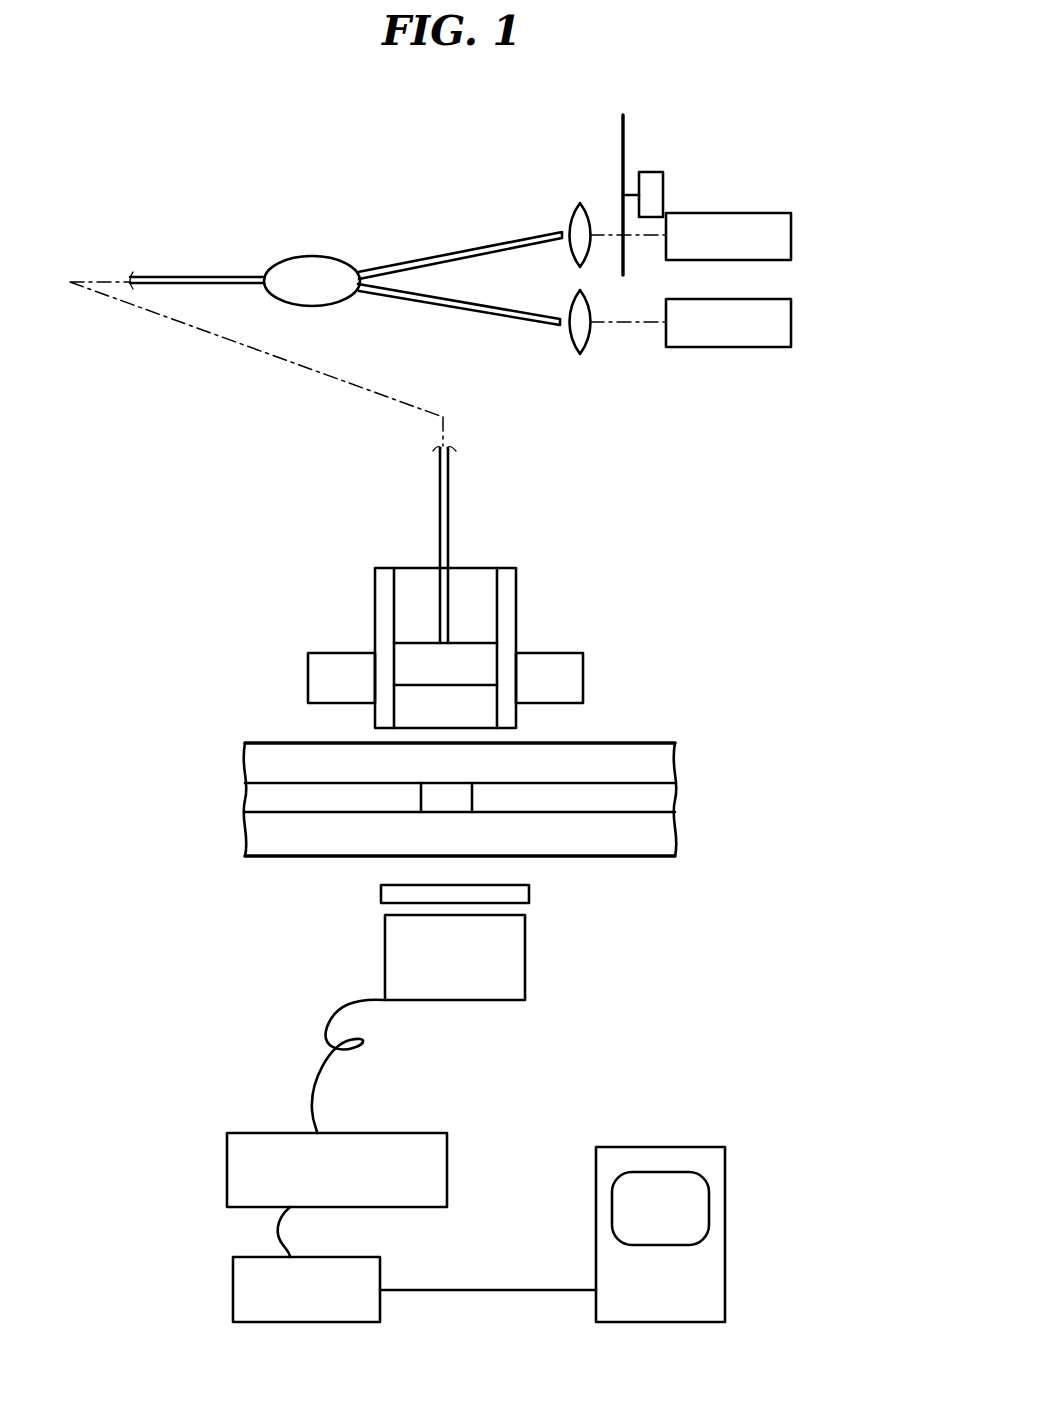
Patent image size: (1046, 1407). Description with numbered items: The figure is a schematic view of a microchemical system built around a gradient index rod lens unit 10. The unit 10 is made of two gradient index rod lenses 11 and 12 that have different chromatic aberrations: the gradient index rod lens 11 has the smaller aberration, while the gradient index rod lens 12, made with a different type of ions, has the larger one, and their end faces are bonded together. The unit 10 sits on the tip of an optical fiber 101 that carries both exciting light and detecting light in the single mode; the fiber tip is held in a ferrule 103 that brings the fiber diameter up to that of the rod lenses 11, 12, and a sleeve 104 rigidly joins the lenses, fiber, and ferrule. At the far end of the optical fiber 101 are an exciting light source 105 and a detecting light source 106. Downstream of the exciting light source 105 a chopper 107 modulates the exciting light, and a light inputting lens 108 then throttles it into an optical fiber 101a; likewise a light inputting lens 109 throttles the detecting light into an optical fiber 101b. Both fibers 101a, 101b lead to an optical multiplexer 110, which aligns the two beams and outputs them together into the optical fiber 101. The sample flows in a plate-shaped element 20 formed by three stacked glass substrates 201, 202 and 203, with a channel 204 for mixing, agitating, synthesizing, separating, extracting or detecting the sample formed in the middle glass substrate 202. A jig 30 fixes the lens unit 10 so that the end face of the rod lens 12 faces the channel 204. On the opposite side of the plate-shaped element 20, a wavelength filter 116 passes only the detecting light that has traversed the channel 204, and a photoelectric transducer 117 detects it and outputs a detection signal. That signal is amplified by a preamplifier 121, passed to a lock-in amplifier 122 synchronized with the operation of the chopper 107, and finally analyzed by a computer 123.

The gradient index rod lens unit 10 is at (445, 609).
The gradient index rod lens 11 is at (482, 667).
The gradient index rod lens 12 is at (482, 702).
The plate-shaped element 20 is at (529, 822).
The jig 30 is at (587, 683).
The optical fiber 101 is at (215, 275).
The optical fiber 101a is at (420, 252).
The optical fiber 101b is at (402, 300).
The ferrule 103 is at (412, 583).
The sleeve 104 is at (382, 602).
The exciting light source 105 is at (773, 212).
The detecting light source 106 is at (773, 299).
The chopper 107 is at (627, 137).
The light inputting lens 108 is at (572, 212).
The light inputting lens 109 is at (570, 345).
The optical multiplexer 110 is at (310, 255).
The wavelength filter 116 is at (533, 893).
The photoelectric transducer 117 is at (525, 943).
The preamplifier 121 is at (390, 1132).
The lock-in amplifier 122 is at (353, 1257).
The computer 123 is at (677, 1145).
The glass substrate 201 is at (652, 758).
The glass substrate 202 is at (643, 793).
The glass substrate 203 is at (653, 828).
The channel 204 is at (455, 797).